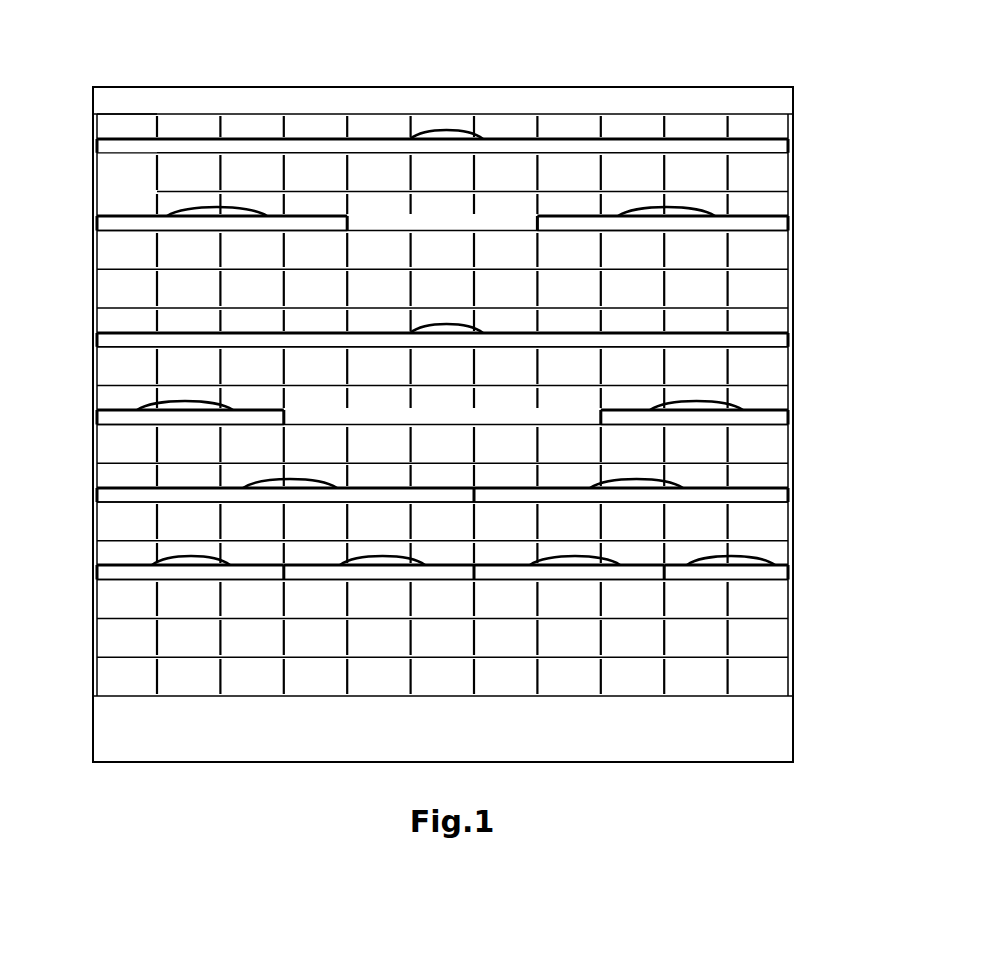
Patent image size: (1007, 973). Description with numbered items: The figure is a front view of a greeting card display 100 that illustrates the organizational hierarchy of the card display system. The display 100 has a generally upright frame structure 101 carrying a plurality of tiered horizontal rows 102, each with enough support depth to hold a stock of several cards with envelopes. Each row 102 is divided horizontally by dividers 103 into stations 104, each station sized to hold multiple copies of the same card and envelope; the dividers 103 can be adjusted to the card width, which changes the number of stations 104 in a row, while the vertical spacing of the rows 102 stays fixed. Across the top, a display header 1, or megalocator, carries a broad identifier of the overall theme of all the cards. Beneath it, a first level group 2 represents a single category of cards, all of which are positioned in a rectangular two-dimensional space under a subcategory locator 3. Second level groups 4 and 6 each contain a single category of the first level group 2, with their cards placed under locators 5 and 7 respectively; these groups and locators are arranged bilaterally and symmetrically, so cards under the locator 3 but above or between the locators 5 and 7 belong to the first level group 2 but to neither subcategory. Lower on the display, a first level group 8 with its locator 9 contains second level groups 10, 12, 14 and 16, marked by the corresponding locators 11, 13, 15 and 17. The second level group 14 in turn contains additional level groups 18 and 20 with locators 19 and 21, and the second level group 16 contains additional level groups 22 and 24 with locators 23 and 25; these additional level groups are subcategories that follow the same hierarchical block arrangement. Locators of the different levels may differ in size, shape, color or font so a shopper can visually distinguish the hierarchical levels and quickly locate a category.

The display header 1 is at (517, 72).
The greeting card display 100 is at (340, 75).
The frame structure 101 is at (797, 679).
The tiered horizontal rows 102 is at (86, 171).
The dividers 103 is at (160, 128).
The stations 104 is at (135, 127).
The first level group 2 is at (800, 140).
The subcategory locator 3 is at (755, 147).
The second level group 4 is at (85, 218).
The locator 5 is at (120, 226).
The second level group 6 is at (800, 218).
The locator 7 is at (760, 225).
The first level group 8 is at (85, 337).
The locator 9 is at (118, 342).
The second level group 10 is at (85, 412).
The locator 11 is at (112, 418).
The second level group 12 is at (800, 410).
The locator 13 is at (775, 420).
The second level group 14 is at (85, 488).
The locator 15 is at (130, 497).
The second level group 16 is at (800, 487).
The locator 17 is at (765, 497).
The additional level group 18 is at (85, 567).
The locator 19 is at (128, 578).
The additional level group 20 is at (322, 586).
The locator 21 is at (328, 572).
The additional level group 22 is at (635, 589).
The locator 23 is at (590, 575).
The additional level group 24 is at (800, 572).
The locator 25 is at (780, 580).